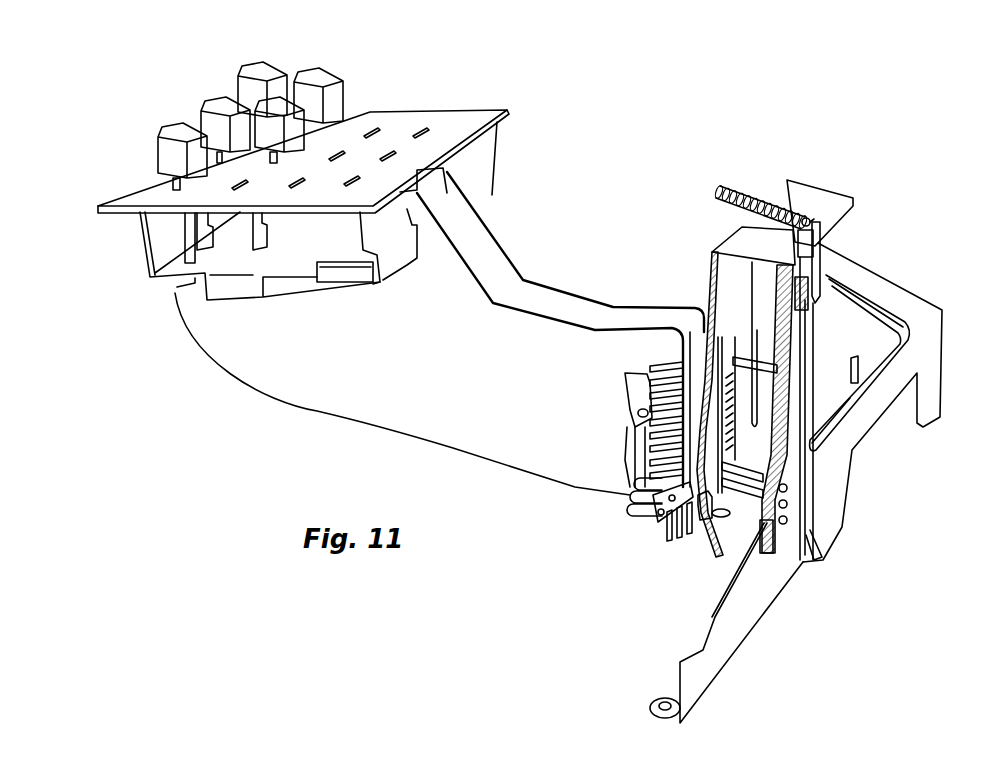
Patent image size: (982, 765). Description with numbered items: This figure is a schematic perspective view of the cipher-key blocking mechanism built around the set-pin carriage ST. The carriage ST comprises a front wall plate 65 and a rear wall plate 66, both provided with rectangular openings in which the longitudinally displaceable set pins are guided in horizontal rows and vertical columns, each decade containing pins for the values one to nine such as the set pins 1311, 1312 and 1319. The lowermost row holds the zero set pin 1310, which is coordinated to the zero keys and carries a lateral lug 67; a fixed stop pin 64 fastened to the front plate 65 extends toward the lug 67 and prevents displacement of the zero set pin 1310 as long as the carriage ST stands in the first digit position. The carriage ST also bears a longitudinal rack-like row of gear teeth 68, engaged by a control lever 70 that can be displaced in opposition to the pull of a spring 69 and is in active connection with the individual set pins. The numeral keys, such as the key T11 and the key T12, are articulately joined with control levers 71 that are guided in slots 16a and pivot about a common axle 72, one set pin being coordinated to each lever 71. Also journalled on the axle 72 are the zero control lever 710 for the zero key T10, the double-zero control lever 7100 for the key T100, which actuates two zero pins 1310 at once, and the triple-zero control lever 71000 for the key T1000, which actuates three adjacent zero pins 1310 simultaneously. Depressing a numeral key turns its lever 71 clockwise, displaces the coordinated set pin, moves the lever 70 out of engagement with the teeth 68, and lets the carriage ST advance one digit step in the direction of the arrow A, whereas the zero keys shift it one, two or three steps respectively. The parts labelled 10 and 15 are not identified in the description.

The mounting plate 10 is at (463, 120).
The triple-zero cipher key T1000 is at (162, 158).
The double-zero cipher key T100 is at (205, 117).
The zero cipher key T10 is at (253, 85).
The cipher key for numeral one T11 is at (340, 93).
The cipher key for numeral two T12 is at (377, 110).
The connecting strip 15 is at (493, 260).
The slots 16a is at (665, 357).
The pivot axle 72 is at (643, 442).
The control levers 71 is at (650, 466).
The fixed stop pin 64 is at (710, 543).
The zero control lever 710 is at (662, 522).
The double-zero control lever 7100 is at (674, 526).
The triple-zero control lever 71000 is at (680, 537).
The front wall plate 65 is at (732, 285).
The lateral lug 67 is at (727, 357).
The set pin 1312 is at (763, 473).
The set pin 1311 is at (763, 492).
The spring 69 is at (740, 187).
The set-pin carriage ST is at (813, 190).
The gear teeth 68 is at (825, 246).
The set pin 1319 is at (767, 352).
The rear wall plate 66 is at (833, 520).
The control lever 70 is at (753, 602).
The zero set pin 1310 is at (747, 530).
The arrow A is at (883, 517).